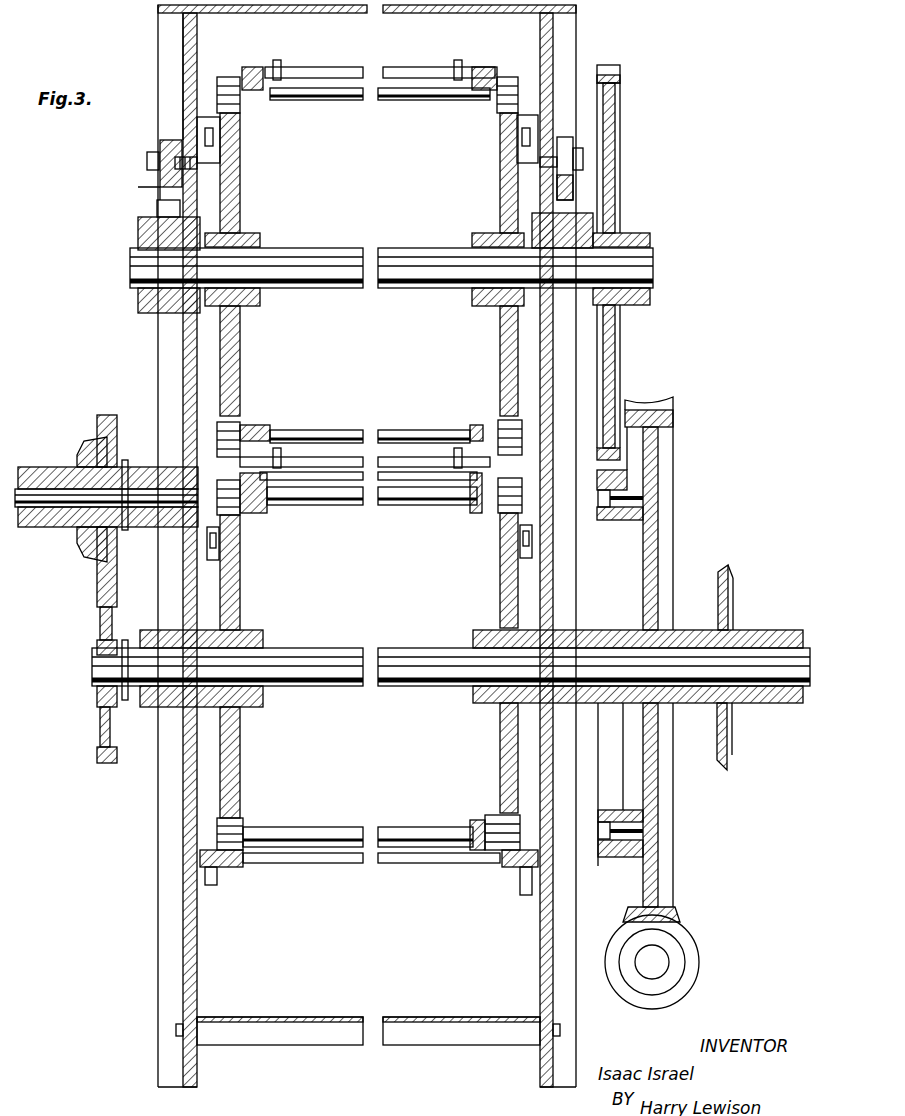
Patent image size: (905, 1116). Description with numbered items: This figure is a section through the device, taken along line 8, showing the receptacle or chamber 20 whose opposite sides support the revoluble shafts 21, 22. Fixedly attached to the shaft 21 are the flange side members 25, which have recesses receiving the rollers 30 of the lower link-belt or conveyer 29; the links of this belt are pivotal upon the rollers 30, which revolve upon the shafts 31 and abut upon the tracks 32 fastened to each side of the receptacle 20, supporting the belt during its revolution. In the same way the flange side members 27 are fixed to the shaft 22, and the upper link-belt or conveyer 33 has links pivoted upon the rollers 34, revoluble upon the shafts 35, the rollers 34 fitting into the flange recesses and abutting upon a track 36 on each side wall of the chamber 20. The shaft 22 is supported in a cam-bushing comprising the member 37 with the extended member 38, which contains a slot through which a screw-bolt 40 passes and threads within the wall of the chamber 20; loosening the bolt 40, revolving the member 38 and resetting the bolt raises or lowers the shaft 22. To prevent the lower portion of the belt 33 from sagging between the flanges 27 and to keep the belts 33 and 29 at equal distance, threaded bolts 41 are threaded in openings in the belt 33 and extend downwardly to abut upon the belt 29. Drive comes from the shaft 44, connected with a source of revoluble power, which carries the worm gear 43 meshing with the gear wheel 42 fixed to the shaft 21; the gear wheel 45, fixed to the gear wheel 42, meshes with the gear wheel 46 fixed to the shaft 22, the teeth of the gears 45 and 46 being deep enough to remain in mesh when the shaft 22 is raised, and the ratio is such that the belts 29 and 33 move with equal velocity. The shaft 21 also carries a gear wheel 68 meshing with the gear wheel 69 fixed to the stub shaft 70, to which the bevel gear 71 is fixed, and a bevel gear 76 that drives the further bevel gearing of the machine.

The section line 8 is at (105, 197).
The receptacle 20 is at (367, 546).
The revoluble shaft 21 is at (386, 690).
The revoluble shaft 22 is at (399, 256).
The flange side member 25 is at (232, 593).
The flange side member 27 is at (232, 355).
The link-belt 29 is at (395, 478).
The roller 30 is at (238, 515).
The shaft 31 is at (415, 505).
The track 32 is at (212, 562).
The link-belt 33 is at (402, 72).
The roller 34 is at (233, 76).
The shaft 35 is at (387, 106).
The track 36 is at (205, 160).
The cam-bushing member 37 is at (140, 240).
The extended member 38 is at (160, 145).
The screw-bolt 40 is at (147, 162).
The threaded bolt 41 is at (278, 450).
The gear wheel 42 is at (655, 873).
The worm gear 43 is at (690, 950).
The shaft 44 is at (655, 965).
The gear wheel 45 is at (652, 478).
The gear wheel 46 is at (615, 382).
The gear wheel 68 is at (102, 723).
The gear wheel 69 is at (105, 457).
The stub shaft 70 is at (160, 500).
The bevel gear 71 is at (85, 555).
The bevel gear 76 is at (730, 575).